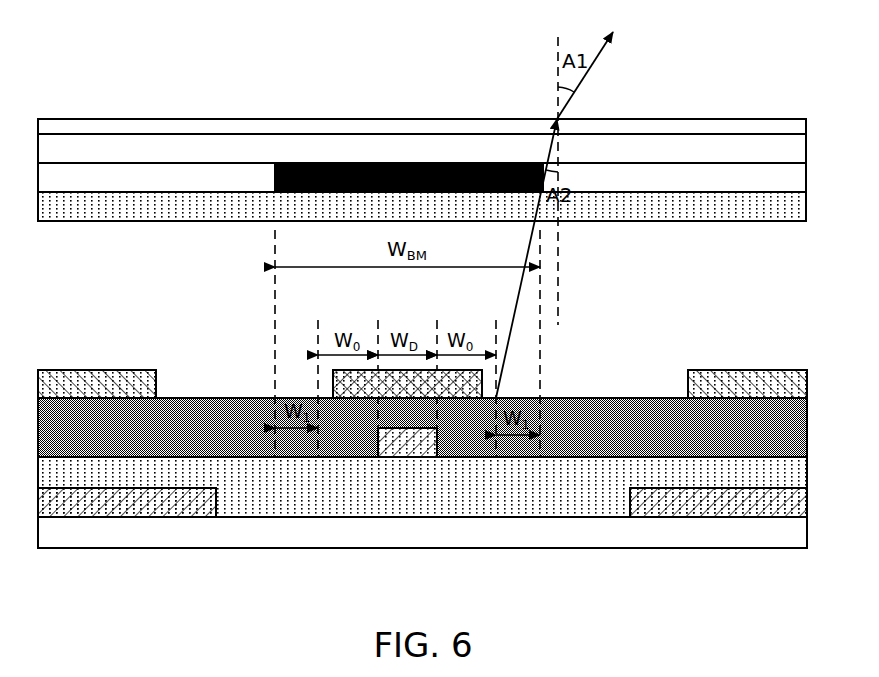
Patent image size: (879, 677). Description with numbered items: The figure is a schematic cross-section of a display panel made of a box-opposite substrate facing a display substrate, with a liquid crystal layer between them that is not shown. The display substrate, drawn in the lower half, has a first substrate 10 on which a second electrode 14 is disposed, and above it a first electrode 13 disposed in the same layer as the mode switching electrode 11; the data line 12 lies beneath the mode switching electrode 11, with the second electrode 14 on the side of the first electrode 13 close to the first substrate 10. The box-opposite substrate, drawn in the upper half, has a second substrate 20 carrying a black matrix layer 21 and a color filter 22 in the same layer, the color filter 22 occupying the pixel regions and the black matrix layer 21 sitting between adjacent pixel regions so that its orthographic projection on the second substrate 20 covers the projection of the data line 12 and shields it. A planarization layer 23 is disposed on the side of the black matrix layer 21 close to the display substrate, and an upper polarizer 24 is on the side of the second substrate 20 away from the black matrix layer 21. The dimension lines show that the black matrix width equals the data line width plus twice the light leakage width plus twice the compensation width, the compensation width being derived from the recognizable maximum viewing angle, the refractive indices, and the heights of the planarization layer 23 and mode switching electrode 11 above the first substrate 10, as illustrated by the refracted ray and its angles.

The first substrate 10 is at (568, 527).
The mode switching electrode 11 is at (367, 378).
The data line 12 is at (403, 445).
The first electrode 13 is at (700, 387).
The second electrode 14 is at (715, 503).
The second substrate 20 is at (670, 153).
The black matrix layer 21 is at (472, 163).
The color filter 22 is at (157, 175).
The planarization layer 23 is at (70, 210).
The upper polarizer 24 is at (735, 122).